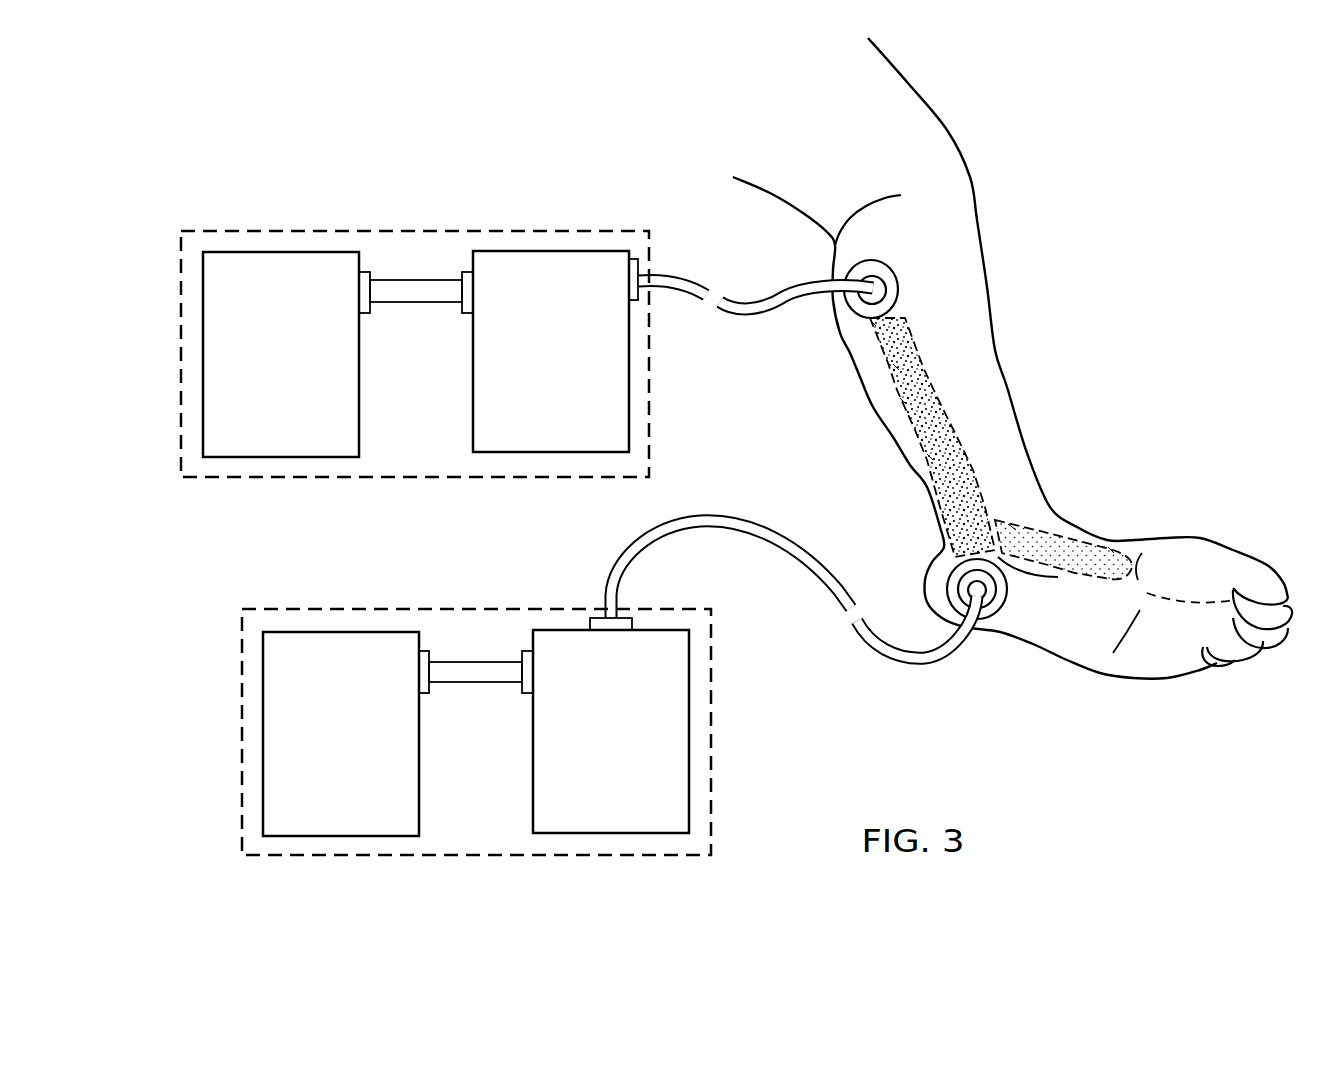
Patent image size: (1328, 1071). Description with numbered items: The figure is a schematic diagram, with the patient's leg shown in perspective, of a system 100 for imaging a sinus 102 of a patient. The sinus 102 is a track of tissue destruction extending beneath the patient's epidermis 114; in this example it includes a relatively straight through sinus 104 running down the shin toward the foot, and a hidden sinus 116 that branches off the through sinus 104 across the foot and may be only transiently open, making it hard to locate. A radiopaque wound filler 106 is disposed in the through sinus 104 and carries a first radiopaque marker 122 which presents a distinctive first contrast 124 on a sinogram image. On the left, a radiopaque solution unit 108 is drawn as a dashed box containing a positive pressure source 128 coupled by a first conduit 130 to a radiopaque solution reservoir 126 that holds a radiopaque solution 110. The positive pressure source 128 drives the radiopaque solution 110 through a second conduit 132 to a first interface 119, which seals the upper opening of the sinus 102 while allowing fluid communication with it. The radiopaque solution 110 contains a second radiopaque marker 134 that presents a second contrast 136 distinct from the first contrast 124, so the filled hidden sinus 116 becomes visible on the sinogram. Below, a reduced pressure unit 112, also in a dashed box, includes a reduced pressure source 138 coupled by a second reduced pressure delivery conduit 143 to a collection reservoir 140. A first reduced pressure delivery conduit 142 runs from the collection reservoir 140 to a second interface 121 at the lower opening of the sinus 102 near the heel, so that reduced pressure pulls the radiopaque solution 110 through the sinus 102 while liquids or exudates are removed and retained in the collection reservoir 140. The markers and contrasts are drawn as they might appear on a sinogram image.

The system 100 is at (388, 97).
The sinus 102 is at (903, 401).
The through sinus 104 is at (930, 457).
The radiopaque wound filler 106 is at (930, 380).
The radiopaque solution unit 108 is at (415, 324).
The radiopaque solution 110 is at (1043, 542).
The reduced pressure unit 112 is at (439, 732).
The epidermis 114 is at (903, 83).
The hidden sinus 116 is at (1111, 550).
The first interface 119 is at (873, 273).
The second interface 121 is at (988, 598).
The first radiopaque marker 122 is at (873, 323).
The first contrast 124 is at (897, 367).
The radiopaque solution reservoir 126 is at (533, 366).
The positive pressure source 128 is at (262, 366).
The first conduit 130 is at (416, 305).
The second conduit 132 is at (690, 277).
The second radiopaque marker 134 is at (1012, 527).
The second contrast 136 is at (1072, 560).
The reduced pressure source 138 is at (322, 749).
The collection reservoir 140 is at (593, 749).
The first reduced pressure delivery conduit 142 is at (712, 531).
The second reduced pressure delivery conduit 143 is at (477, 685).